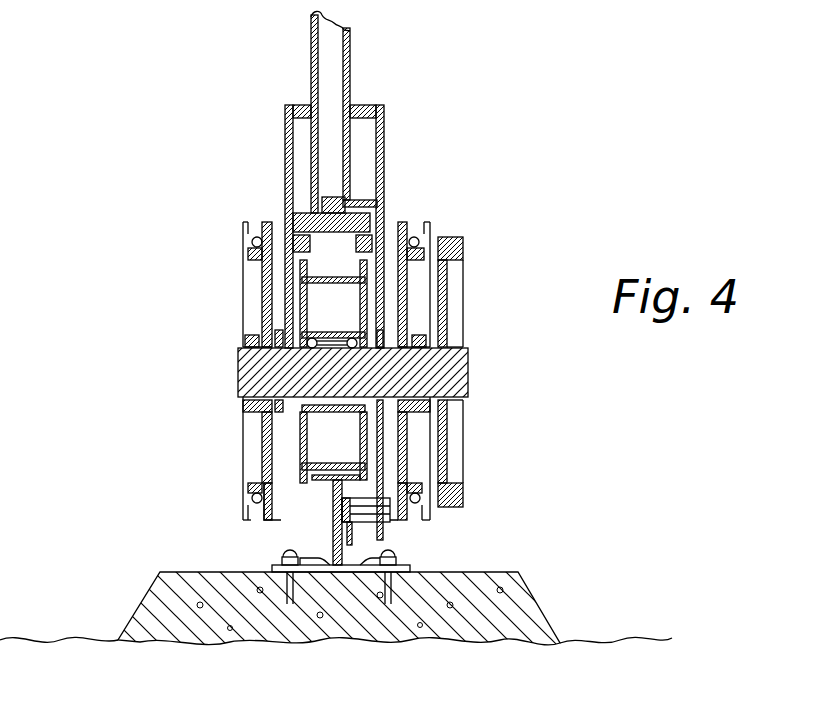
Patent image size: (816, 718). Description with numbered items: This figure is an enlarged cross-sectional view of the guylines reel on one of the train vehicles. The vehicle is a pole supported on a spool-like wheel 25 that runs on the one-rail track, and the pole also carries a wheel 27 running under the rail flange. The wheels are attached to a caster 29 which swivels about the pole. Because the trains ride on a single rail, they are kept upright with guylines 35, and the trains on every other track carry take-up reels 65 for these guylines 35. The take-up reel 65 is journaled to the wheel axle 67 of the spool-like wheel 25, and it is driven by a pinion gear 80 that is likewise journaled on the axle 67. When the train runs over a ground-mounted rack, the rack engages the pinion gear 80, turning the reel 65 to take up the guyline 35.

The spool-like wheel 25 is at (300, 452).
The wheel 27 is at (350, 525).
The caster 29 is at (382, 148).
The guyline 35 is at (257, 237).
The take-up reel 65 is at (253, 450).
The wheel axle 67 is at (258, 375).
The pinion gear 80 is at (458, 238).